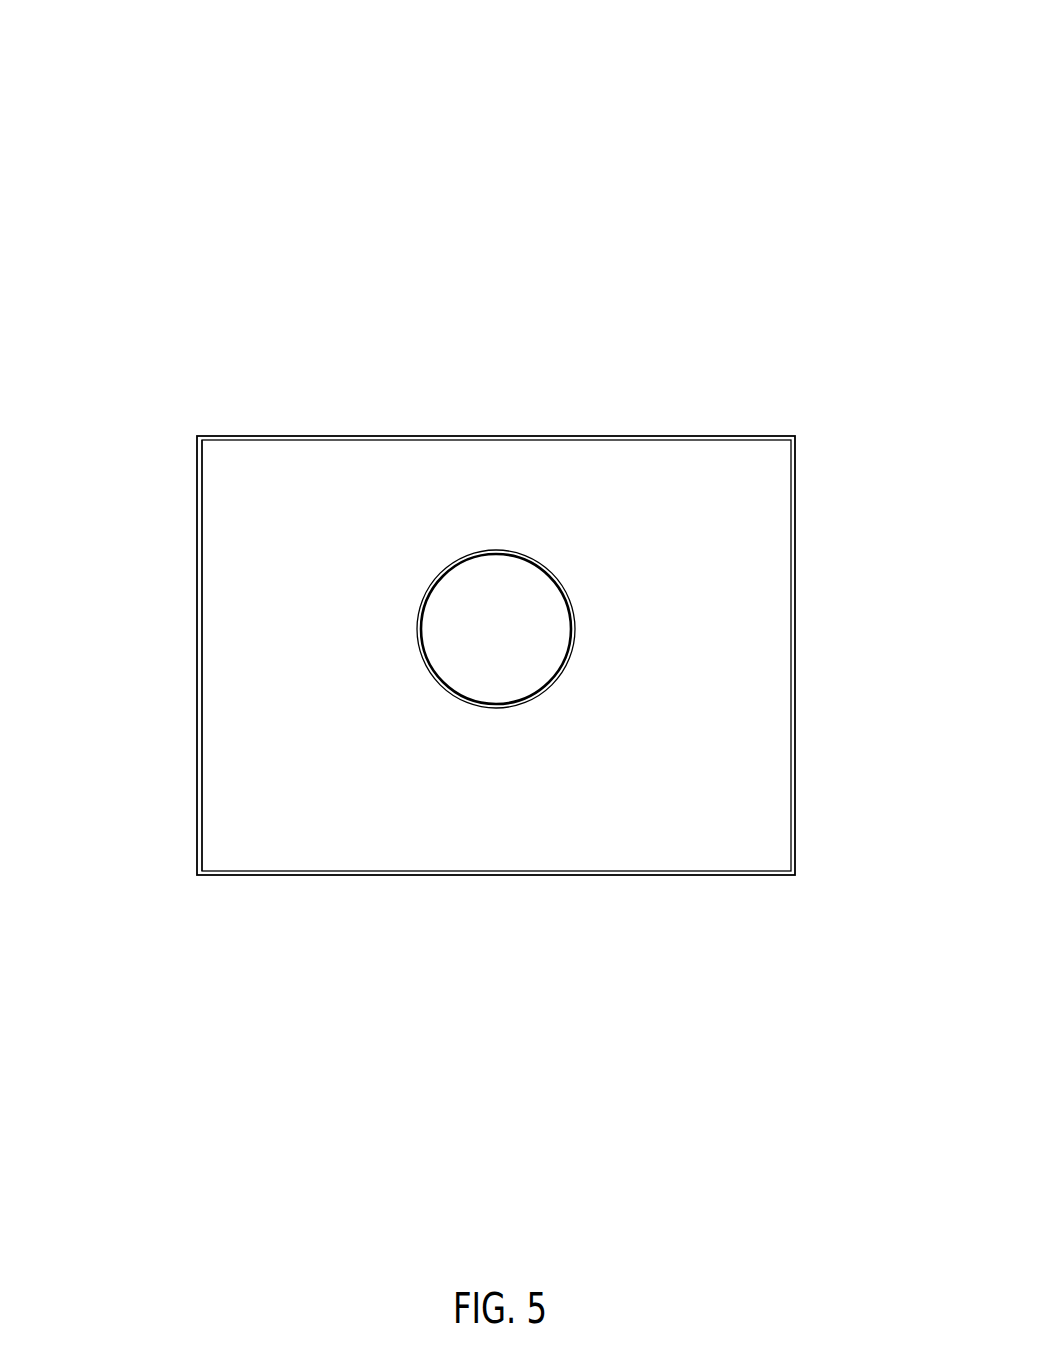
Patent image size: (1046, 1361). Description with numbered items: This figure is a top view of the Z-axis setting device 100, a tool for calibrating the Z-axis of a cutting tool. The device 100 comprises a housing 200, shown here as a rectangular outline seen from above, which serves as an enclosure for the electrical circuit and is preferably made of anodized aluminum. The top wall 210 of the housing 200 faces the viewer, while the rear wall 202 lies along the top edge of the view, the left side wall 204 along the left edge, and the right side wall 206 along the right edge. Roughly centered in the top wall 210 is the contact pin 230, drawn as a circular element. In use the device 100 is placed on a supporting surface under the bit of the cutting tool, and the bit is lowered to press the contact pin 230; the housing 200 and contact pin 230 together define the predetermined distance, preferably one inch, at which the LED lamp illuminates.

The Z-axis setting device 100 is at (127, 167).
The housing 200 is at (795, 535).
The rear wall 202 is at (498, 402).
The left side wall 204 is at (178, 655).
The right side wall 206 is at (812, 655).
The top wall 210 is at (765, 815).
The contact pin 230 is at (547, 585).